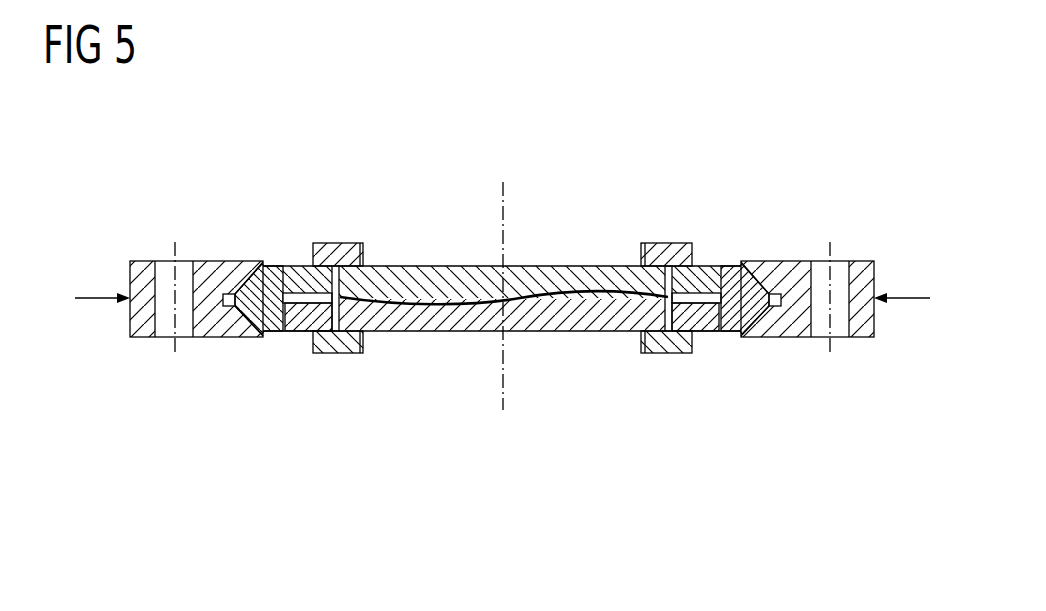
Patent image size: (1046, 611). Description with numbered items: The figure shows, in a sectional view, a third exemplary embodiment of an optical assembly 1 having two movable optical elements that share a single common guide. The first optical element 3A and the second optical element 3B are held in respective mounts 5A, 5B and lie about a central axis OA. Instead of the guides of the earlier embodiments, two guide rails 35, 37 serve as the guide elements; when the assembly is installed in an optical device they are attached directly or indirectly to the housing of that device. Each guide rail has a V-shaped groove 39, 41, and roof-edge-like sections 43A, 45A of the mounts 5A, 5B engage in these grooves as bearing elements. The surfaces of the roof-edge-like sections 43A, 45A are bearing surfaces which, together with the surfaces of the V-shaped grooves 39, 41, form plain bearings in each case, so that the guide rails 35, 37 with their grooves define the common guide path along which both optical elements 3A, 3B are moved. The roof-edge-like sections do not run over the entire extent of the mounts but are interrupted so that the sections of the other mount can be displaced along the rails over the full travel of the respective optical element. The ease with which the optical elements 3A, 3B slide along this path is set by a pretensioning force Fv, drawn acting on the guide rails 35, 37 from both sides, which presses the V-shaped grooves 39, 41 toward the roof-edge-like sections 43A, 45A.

The clamping arrangement 1 is at (672, 128).
The first optical element 3A is at (420, 274).
The second optical element 3B is at (438, 328).
The mount 5A is at (343, 243).
The mount 5B is at (650, 353).
The guide rail 35 is at (207, 261).
The guide rail 37 is at (793, 261).
The V-shaped groove 39 is at (268, 284).
The V-shaped groove 41 is at (733, 300).
The roof-edge-like section 43A is at (233, 332).
The roof-edge-like section 45A is at (768, 308).
The axis OA is at (503, 198).
The pretensioning force Fv is at (97, 298).